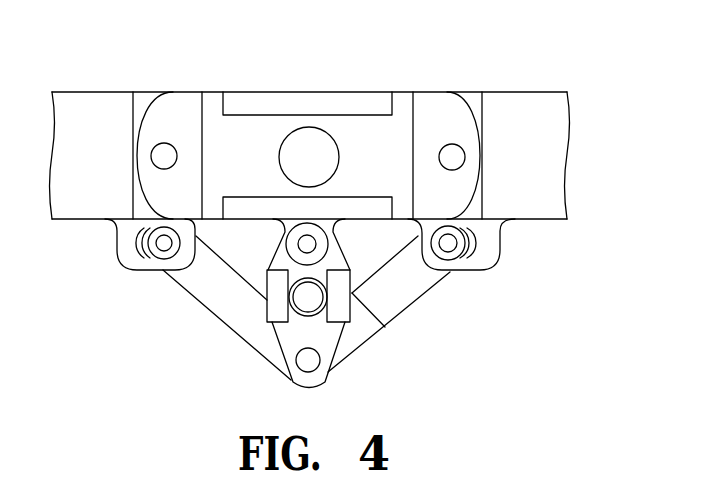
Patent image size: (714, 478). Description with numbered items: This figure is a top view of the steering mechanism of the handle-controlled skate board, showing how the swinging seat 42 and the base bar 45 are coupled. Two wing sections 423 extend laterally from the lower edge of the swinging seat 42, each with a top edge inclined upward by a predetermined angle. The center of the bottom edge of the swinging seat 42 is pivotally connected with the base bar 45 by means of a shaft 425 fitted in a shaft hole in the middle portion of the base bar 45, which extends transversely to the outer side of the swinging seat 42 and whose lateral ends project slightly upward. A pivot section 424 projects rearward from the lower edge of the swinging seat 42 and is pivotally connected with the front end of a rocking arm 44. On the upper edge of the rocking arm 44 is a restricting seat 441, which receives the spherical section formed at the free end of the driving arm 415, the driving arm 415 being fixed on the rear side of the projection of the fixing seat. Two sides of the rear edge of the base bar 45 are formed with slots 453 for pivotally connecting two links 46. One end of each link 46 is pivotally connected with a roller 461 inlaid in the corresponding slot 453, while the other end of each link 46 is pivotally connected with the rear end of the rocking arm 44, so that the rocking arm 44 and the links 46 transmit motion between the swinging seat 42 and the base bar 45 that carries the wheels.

The swinging seat 42 is at (215, 104).
The wing section 423 is at (173, 104).
The pivot section 424 is at (329, 243).
The shaft 425 is at (310, 140).
The rocking arm 44 is at (282, 335).
The restricting seat 441 is at (352, 310).
The driving arm 415 is at (312, 312).
The base bar 45 is at (524, 213).
The slot 453 is at (131, 242).
The link 46 is at (218, 307).
The roller 461 is at (150, 256).